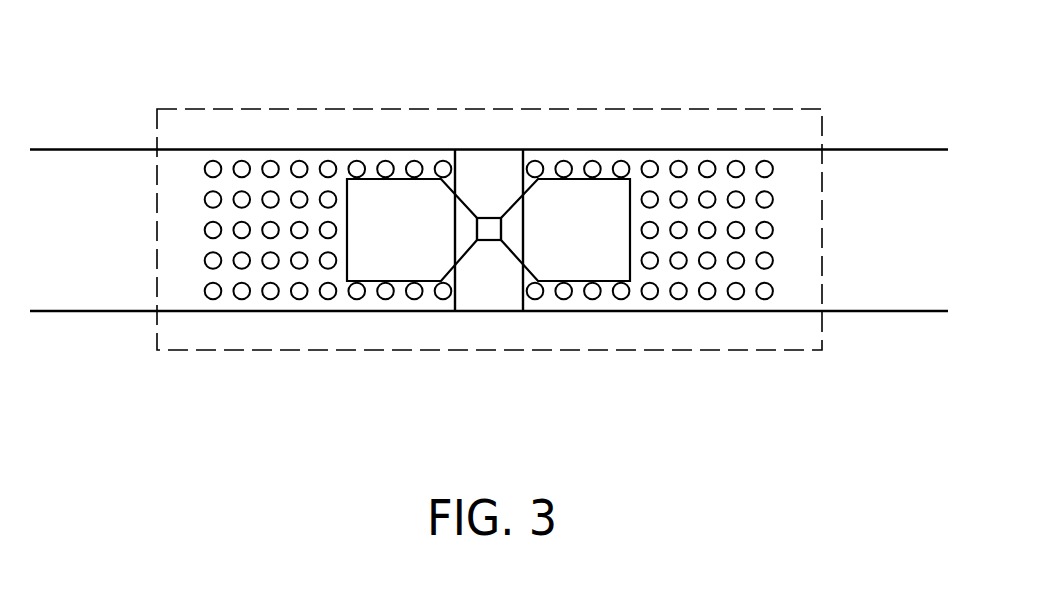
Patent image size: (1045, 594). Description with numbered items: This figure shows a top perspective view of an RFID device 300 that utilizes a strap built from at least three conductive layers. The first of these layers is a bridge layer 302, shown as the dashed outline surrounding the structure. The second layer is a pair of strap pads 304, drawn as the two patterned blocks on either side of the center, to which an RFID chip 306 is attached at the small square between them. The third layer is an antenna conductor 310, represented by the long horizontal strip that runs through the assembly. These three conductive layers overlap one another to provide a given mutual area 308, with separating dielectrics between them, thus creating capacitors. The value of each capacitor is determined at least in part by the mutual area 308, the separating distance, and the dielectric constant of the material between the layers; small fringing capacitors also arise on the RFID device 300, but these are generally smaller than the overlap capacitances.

The RFID device 300 is at (206, 92).
The bridge layer 302 is at (732, 130).
The strap pads 304 is at (386, 183).
The RFID chip 306 is at (492, 225).
The mutual area 308 is at (285, 275).
The antenna conductor 310 is at (857, 287).